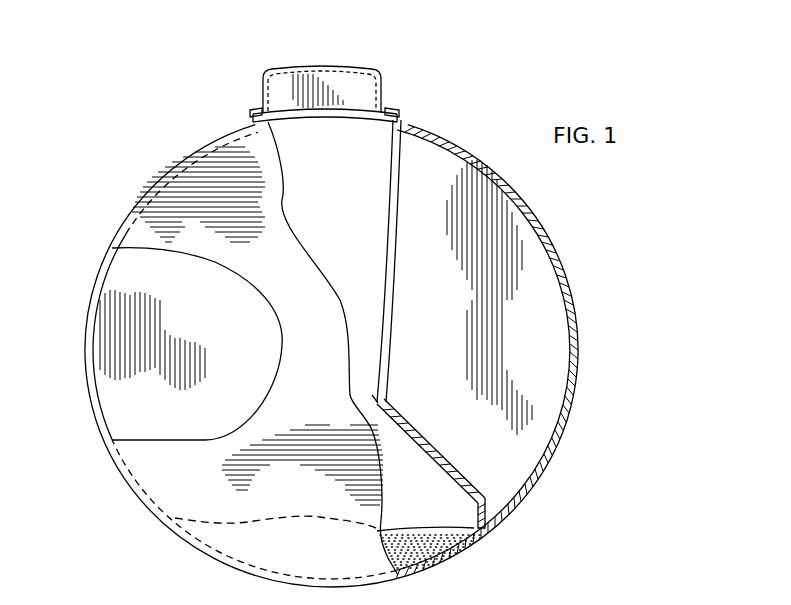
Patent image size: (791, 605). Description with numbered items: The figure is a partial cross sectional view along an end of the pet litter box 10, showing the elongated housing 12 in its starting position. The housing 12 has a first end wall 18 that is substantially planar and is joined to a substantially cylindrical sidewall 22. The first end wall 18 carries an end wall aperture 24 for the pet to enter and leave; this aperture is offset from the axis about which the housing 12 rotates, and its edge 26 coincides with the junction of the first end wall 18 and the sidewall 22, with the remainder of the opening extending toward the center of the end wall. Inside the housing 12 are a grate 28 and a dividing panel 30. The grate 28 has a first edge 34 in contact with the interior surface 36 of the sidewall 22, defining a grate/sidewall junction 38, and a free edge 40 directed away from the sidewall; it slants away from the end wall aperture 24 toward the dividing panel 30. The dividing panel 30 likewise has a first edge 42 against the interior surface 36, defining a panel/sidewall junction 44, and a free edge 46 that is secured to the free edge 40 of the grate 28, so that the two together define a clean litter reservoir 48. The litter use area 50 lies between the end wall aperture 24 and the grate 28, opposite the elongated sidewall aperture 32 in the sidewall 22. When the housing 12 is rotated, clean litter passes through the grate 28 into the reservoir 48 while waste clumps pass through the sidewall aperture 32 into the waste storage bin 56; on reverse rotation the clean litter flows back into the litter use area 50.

The pet litter box 10 is at (136, 157).
The elongated housing 12 is at (192, 148).
The first end wall 18 is at (132, 232).
The sidewall 22 is at (137, 489).
The end wall aperture 24 is at (117, 392).
The edge of the first end wall aperture 26 is at (90, 312).
The grate 28 is at (452, 470).
The dividing panel 30 is at (394, 313).
The sidewall aperture 32 is at (306, 118).
The first edge of the grate 34 is at (498, 520).
The interior surface of the sidewall 36 is at (557, 415).
The grate/sidewall junction 38 is at (473, 527).
The free edge of the grate 40 is at (362, 402).
The first edge of the dividing panel 42 is at (405, 118).
The panel/sidewall junction 44 is at (380, 120).
The free edge of the dividing panel 46 is at (372, 392).
The clean litter reservoir 48 is at (446, 262).
The litter use area 50 is at (422, 548).
The waste storage bin 56 is at (282, 68).